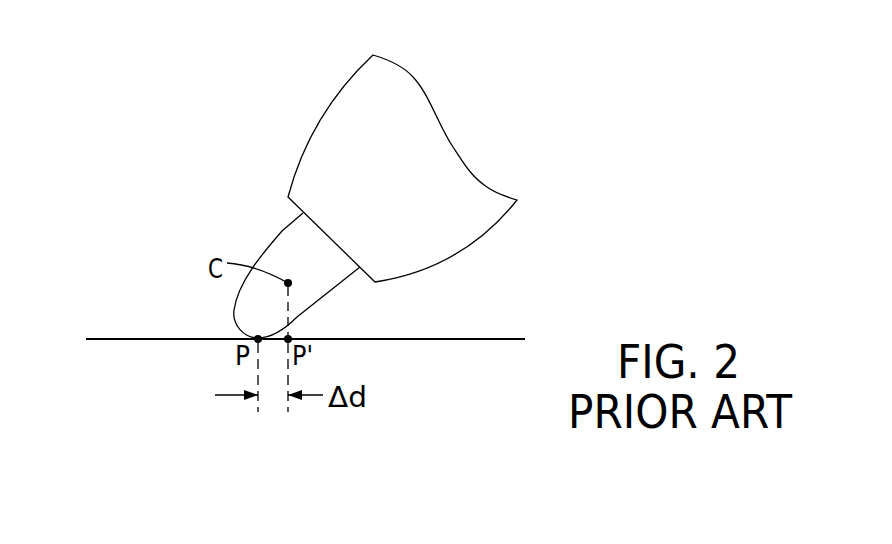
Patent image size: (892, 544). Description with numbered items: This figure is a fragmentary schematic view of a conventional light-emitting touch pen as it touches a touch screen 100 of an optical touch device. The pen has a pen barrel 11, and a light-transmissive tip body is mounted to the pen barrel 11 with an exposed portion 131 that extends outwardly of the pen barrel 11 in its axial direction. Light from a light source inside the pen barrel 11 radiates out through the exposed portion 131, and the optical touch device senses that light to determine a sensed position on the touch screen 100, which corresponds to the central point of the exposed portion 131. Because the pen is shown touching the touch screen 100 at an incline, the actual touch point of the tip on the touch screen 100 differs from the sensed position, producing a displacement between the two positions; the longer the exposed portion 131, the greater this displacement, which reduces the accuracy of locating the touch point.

The pen barrel 11 is at (330, 107).
The exposed portion 131 is at (288, 223).
The touch screen 100 is at (472, 339).